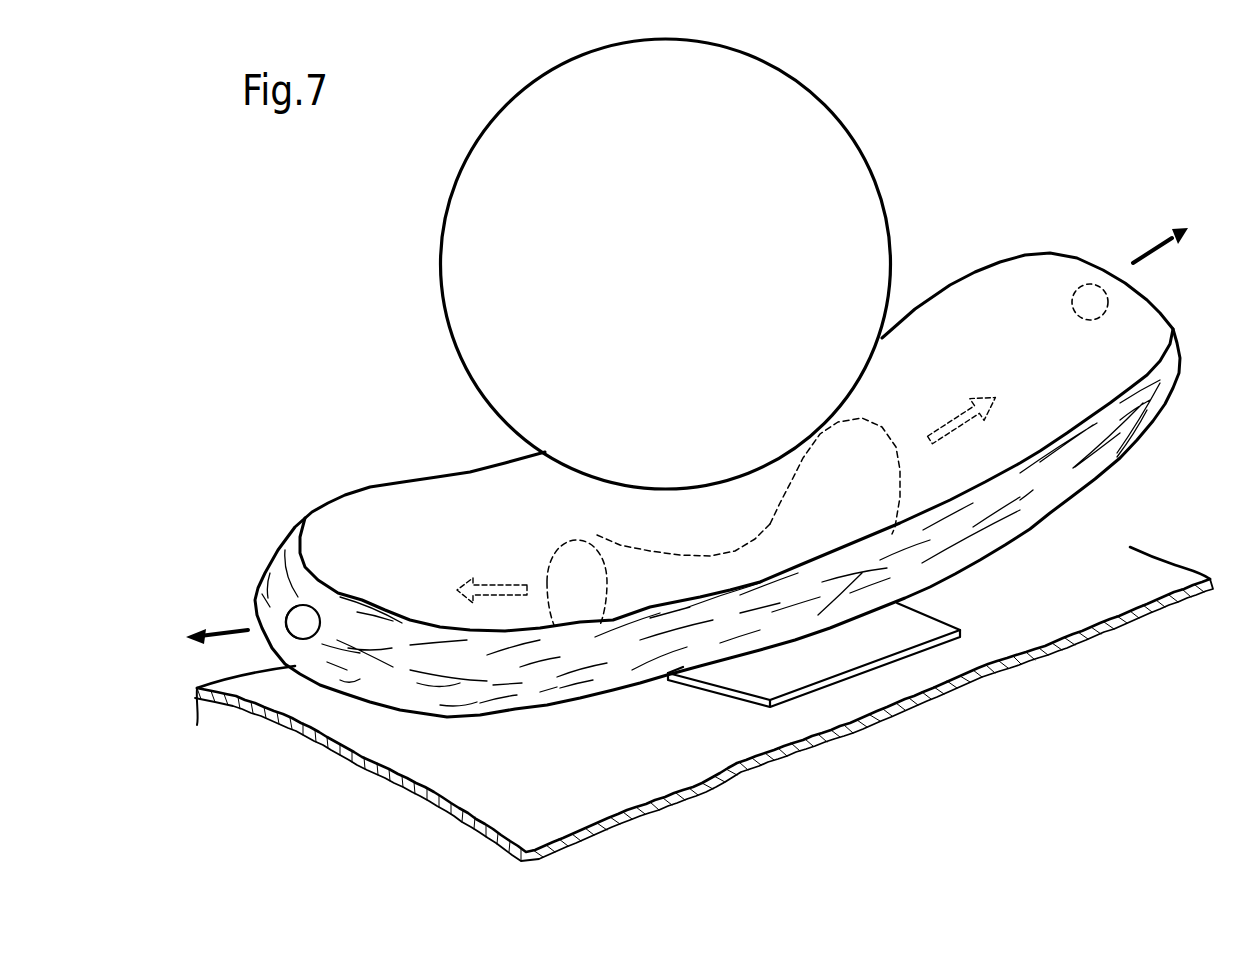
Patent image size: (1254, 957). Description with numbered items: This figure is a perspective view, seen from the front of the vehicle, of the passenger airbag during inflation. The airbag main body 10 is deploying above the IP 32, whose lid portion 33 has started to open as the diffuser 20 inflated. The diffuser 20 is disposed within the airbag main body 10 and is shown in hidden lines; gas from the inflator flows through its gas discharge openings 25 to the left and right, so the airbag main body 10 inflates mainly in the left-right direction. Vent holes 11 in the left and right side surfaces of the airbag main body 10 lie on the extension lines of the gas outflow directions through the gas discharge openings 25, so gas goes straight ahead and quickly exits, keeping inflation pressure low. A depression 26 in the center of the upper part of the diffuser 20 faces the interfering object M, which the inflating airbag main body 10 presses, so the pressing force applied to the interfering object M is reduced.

The interfering object M is at (771, 93).
The airbag main body 10 is at (983, 258).
The vent holes 11 is at (300, 622).
The diffuser 20 is at (885, 406).
The gas discharge openings 25 is at (547, 577).
The depression 26 is at (738, 553).
The IP 32 is at (592, 803).
The lid portion 33 is at (925, 623).